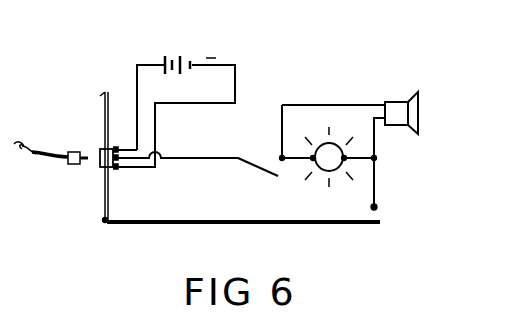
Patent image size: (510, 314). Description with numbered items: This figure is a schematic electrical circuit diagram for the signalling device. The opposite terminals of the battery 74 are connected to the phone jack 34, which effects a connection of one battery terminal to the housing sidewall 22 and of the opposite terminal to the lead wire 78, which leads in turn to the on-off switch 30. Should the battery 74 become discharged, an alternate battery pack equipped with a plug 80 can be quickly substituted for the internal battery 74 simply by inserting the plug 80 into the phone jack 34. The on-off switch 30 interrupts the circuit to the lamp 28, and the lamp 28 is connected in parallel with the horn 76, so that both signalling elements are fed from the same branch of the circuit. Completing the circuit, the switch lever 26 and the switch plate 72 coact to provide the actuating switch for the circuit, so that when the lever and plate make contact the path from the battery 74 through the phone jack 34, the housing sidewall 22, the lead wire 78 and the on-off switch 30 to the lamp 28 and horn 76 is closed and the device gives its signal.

The housing sidewall 22 is at (102, 107).
The switch lever 26 is at (305, 225).
The lamp 28 is at (321, 142).
The on-off switch 30 is at (247, 167).
The phone jack 34 is at (107, 157).
The switch plate 72 is at (378, 207).
The battery 74 is at (192, 55).
The horn 76 is at (388, 102).
The lead wire 78 is at (190, 160).
The plug 80 is at (67, 150).